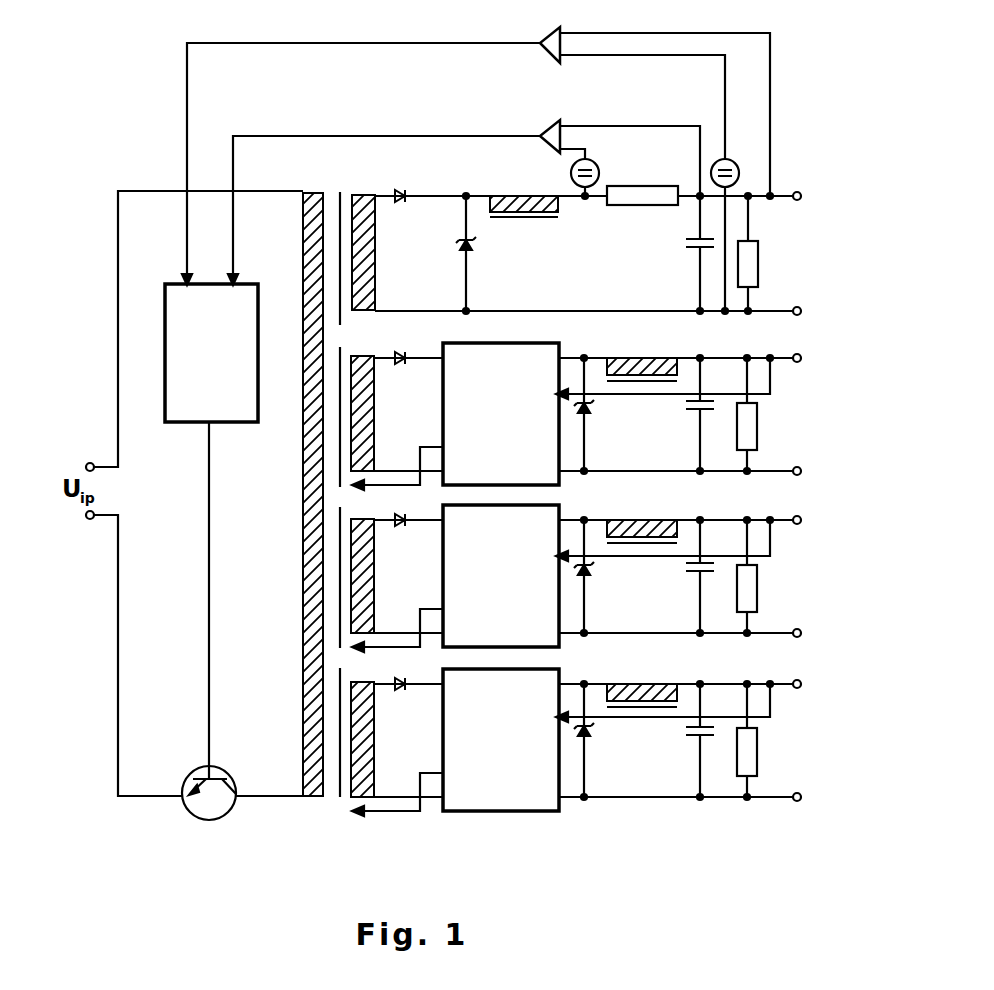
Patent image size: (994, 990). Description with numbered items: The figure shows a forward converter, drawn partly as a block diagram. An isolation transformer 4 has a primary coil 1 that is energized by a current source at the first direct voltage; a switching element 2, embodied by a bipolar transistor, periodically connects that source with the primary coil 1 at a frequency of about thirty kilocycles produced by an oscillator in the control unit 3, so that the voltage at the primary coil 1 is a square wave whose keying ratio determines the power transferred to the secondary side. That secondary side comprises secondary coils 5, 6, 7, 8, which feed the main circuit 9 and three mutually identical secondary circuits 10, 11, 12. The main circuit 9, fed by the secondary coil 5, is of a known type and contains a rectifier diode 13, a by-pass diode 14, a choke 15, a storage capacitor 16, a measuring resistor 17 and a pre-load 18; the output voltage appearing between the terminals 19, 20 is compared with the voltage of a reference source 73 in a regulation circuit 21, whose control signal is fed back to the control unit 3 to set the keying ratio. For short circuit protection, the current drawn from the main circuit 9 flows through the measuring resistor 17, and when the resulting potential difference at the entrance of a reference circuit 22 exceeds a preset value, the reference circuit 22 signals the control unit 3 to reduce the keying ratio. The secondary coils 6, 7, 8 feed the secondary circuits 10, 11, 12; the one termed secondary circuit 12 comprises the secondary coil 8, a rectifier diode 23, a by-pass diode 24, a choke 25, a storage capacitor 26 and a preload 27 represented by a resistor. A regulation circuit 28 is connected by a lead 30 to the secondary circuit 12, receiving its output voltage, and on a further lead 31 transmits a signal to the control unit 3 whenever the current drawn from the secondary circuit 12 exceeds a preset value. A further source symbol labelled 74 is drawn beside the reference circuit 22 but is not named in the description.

The primary coil 1 is at (317, 800).
The switching element 2 is at (210, 808).
The control unit 3 is at (200, 340).
The isolation transformer 4 is at (340, 800).
The secondary coil 5 is at (365, 260).
The secondary coil 6 is at (375, 417).
The secondary coil 7 is at (362, 585).
The secondary coil 8 is at (362, 745).
The main circuit 9 is at (587, 233).
The secondary circuit 10 is at (576, 416).
The secondary circuit 11 is at (576, 578).
The secondary circuit 12 is at (576, 751).
The rectifier diode 13 is at (403, 189).
The by-pass diode 14 is at (458, 248).
The choke 15 is at (518, 197).
The storage capacitor 16 is at (695, 248).
The measuring resistor 17 is at (623, 190).
The pre-load 18 is at (752, 267).
The terminal 19 is at (798, 190).
The terminal 20 is at (798, 307).
The regulation circuit 21 is at (558, 33).
The reference circuit 22 is at (558, 128).
The rectifier diode 23 is at (404, 683).
The by-pass diode 24 is at (588, 735).
The choke 25 is at (645, 687).
The storage capacitor 26 is at (695, 733).
The preload 27 is at (753, 750).
The regulation circuit 28 is at (505, 800).
The lead 30 is at (665, 720).
The lead 31 is at (393, 814).
The reference source 73 is at (733, 163).
The current source 74 is at (598, 167).